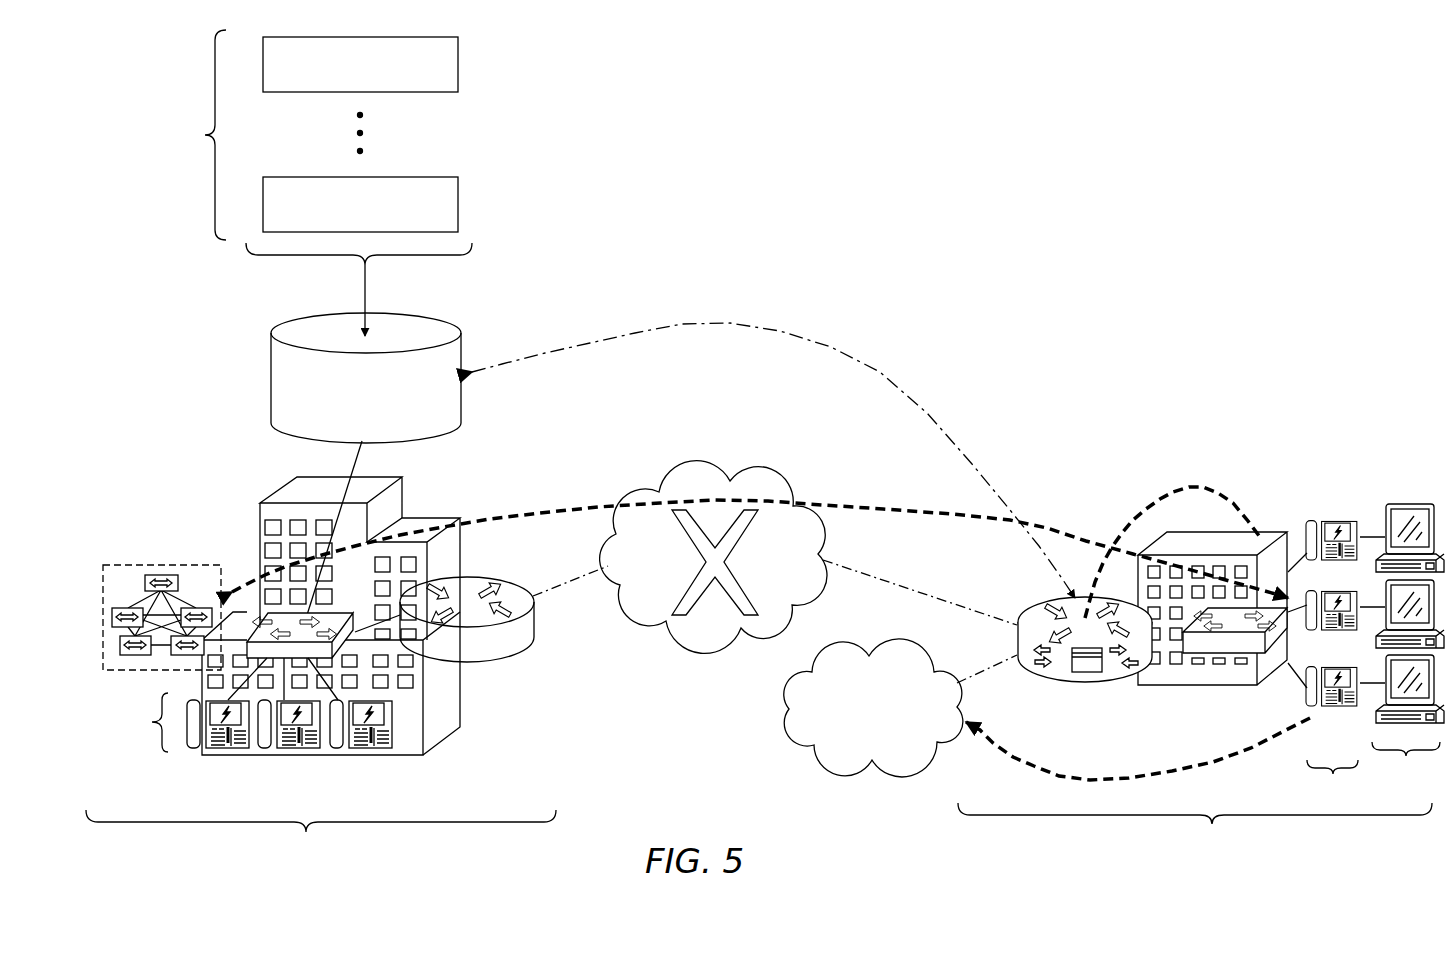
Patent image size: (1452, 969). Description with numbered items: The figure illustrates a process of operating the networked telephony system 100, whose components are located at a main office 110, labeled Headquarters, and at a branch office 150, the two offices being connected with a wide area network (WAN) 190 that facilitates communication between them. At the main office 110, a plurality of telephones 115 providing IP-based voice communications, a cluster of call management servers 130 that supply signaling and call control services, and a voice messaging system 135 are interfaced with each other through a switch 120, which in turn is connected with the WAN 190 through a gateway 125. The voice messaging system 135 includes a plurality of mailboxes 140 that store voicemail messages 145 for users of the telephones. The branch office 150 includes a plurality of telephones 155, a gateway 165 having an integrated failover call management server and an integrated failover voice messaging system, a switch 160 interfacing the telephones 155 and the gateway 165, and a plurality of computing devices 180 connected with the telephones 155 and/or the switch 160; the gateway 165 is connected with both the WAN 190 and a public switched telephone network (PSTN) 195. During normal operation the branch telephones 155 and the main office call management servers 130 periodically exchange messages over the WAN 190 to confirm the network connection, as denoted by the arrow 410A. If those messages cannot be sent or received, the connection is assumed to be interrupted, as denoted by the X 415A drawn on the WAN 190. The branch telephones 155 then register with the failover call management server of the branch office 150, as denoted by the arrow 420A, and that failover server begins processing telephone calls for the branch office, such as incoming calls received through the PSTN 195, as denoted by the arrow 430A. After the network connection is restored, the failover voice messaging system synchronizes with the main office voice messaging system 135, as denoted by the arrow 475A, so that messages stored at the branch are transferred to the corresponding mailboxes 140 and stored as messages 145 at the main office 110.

The networked telephony system 100 is at (936, 160).
The main office 110 is at (332, 674).
The telephones 115 is at (255, 722).
The switch 120 is at (345, 636).
The gateway 125 is at (536, 628).
The call management servers 130 is at (103, 577).
The voice messaging system 135 is at (269, 378).
The mailboxes 140 is at (367, 183).
The messages 145 is at (458, 67).
The branch office 150 is at (1201, 647).
The telephones 155 is at (1332, 662).
The switch 160 is at (1235, 650).
The gateway 165 is at (1026, 603).
The computing devices 180 is at (1408, 643).
The wide area network (WAN) 190 is at (730, 478).
The public switched telephone network (PSTN) 195 is at (850, 762).
The arrow 410A is at (540, 511).
The "X" 415A is at (735, 597).
The arrow 420A is at (1150, 513).
The arrow 430A is at (1095, 778).
The arrow 475A is at (800, 339).